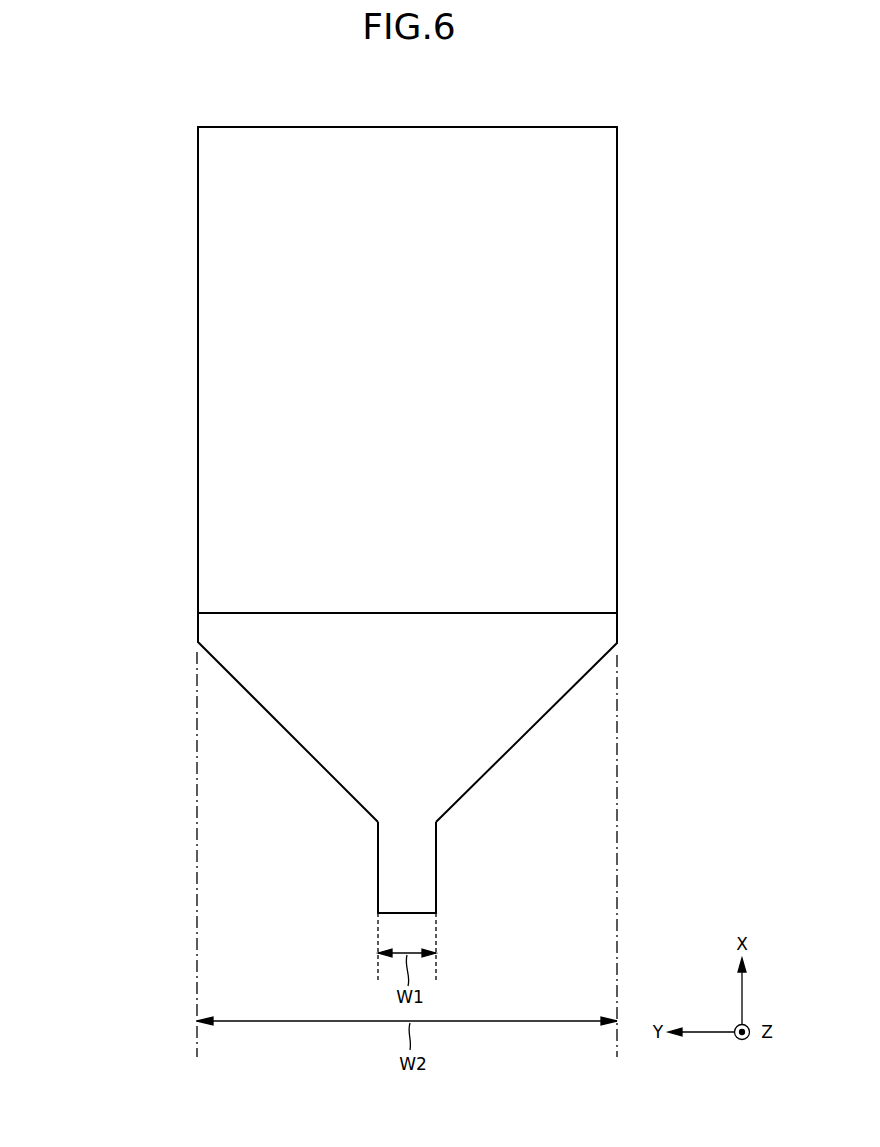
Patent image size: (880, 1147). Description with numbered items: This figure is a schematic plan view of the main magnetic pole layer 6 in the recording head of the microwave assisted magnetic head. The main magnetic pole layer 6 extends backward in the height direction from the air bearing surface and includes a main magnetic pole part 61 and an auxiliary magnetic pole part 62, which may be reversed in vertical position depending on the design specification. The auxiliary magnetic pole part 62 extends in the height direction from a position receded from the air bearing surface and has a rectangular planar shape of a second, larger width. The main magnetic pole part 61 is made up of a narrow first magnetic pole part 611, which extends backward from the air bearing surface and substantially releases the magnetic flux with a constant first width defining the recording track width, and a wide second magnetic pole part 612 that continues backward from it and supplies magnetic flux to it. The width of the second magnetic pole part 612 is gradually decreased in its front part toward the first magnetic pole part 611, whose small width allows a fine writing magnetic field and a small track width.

The main magnetic pole layer 6 is at (85, 618).
The main magnetic pole part 61 is at (133, 760).
The auxiliary magnetic pole part 62 is at (240, 613).
The first magnetic pole part 611 is at (378, 870).
The second magnetic pole part 612 is at (327, 772).